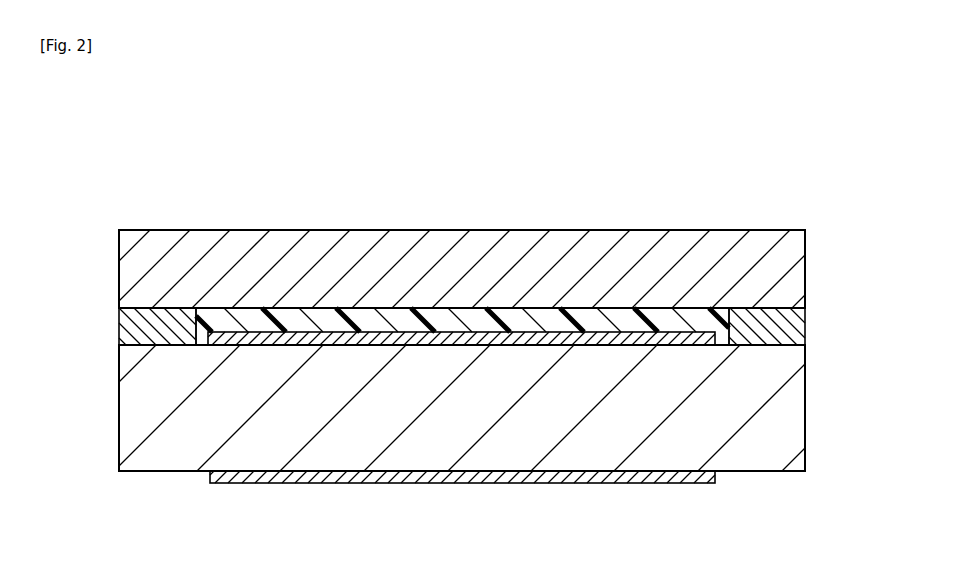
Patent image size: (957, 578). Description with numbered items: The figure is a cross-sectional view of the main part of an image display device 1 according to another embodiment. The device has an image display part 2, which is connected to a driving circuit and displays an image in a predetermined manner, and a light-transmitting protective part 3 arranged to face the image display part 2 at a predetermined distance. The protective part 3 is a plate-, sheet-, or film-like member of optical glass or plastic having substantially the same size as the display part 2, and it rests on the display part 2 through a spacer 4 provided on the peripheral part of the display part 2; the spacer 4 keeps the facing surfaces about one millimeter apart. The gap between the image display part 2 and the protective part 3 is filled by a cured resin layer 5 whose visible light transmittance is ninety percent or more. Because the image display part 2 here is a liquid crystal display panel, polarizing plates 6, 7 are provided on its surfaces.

The image display device 1 is at (89, 111).
The image display part 2 is at (805, 428).
The protective part 3 is at (805, 265).
The spacer 4 is at (119, 330).
The cured resin layer 5 is at (398, 320).
The polarizing plate 6 is at (593, 335).
The polarizing plate 7 is at (510, 484).